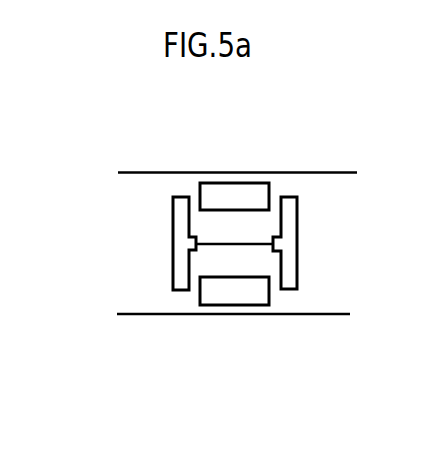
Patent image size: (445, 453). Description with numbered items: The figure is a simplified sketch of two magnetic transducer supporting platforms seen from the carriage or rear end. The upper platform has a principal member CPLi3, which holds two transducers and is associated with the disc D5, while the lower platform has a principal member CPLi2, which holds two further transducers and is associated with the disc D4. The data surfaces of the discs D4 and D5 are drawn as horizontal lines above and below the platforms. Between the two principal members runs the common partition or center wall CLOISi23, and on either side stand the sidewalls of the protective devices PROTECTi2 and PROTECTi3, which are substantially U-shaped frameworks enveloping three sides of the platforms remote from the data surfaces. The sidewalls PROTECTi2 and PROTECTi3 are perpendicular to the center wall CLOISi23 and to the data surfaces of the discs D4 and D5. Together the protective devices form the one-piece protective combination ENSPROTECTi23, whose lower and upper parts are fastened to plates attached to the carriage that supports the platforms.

The disc D5 is at (140, 172).
The disc D4 is at (350, 316).
The principal member CPLi3 is at (213, 187).
The principal member CPLi2 is at (237, 295).
The protective device PROTECTi3 is at (298, 211).
The protective device PROTECTi2 is at (298, 279).
The common partition or center wall CLOISi23 is at (255, 238).
The one-piece protective combination ENSPROTECTi23 is at (156, 256).